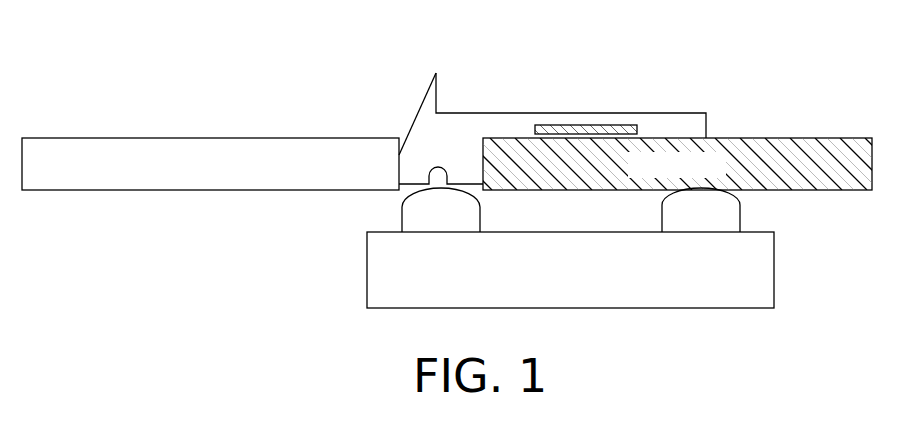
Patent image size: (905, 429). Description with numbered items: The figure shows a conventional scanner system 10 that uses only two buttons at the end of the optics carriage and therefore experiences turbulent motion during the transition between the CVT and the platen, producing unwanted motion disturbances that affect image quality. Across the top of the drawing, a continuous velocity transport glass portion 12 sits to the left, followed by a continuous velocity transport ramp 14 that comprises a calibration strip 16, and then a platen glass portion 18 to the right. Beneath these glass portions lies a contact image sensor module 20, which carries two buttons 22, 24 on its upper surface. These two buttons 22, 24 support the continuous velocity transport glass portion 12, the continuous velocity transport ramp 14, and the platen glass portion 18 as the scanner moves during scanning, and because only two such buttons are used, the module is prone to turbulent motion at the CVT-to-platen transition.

The scanner system 10 is at (267, 38).
The continuous velocity transport glass portion 12 is at (210, 138).
The continuous velocity transport ramp 14 is at (417, 115).
The calibration strip 16 is at (578, 125).
The platen glass portion 18 is at (790, 138).
The contact image sensor module 20 is at (774, 270).
The button 22 is at (428, 226).
The button 24 is at (690, 225).